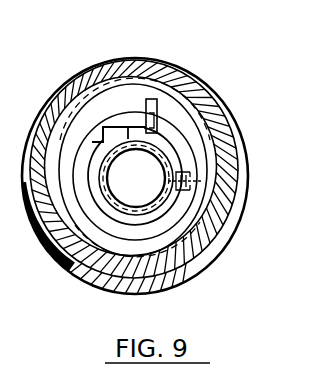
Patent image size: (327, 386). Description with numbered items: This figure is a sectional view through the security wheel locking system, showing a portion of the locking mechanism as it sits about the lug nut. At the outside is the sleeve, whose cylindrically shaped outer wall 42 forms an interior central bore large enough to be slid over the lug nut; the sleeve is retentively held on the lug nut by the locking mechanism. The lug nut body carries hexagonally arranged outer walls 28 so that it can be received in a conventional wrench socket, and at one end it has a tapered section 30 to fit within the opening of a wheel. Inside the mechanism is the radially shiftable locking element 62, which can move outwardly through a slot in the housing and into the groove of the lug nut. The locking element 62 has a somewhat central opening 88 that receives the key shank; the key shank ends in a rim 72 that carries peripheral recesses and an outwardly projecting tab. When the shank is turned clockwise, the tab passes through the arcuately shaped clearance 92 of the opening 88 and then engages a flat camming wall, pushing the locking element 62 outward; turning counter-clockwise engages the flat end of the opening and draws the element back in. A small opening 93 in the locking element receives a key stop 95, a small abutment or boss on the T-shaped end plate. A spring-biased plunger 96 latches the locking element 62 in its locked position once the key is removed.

The outer walls 28 is at (216, 113).
The tapered section 30 is at (192, 108).
The cylindrically shaped outer wall 42 is at (234, 221).
The locking element 62 is at (143, 226).
The rim 72 is at (197, 271).
The central opening 88 is at (106, 134).
The arcuately shaped clearance 92 is at (98, 147).
The small opening 93 is at (160, 104).
The key stop 95 is at (147, 108).
The plunger 96 is at (239, 186).